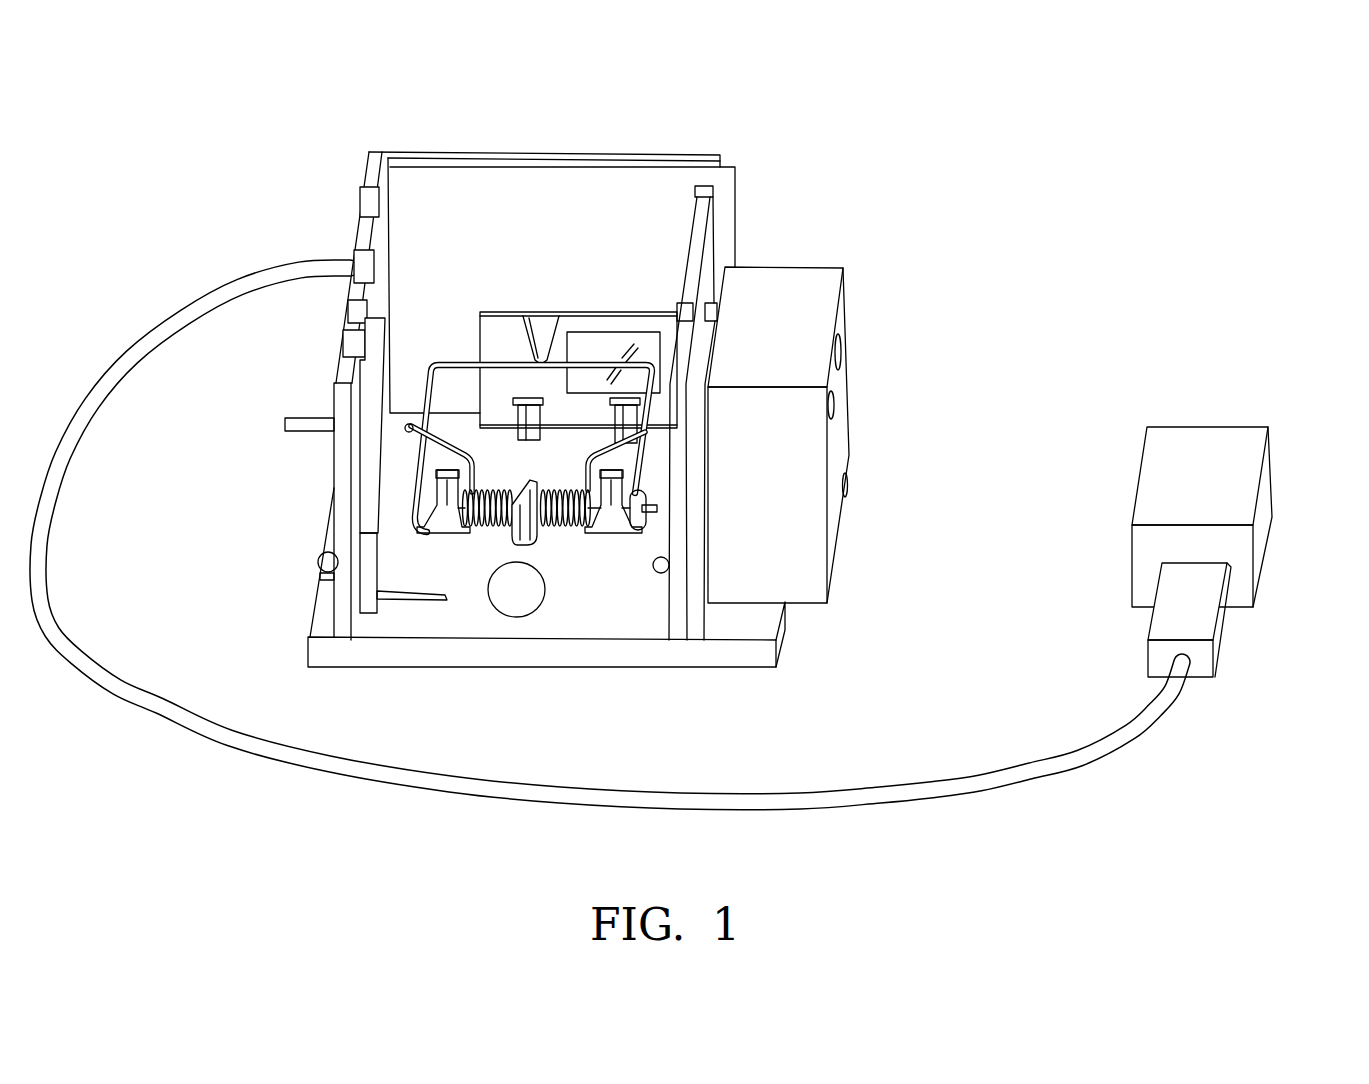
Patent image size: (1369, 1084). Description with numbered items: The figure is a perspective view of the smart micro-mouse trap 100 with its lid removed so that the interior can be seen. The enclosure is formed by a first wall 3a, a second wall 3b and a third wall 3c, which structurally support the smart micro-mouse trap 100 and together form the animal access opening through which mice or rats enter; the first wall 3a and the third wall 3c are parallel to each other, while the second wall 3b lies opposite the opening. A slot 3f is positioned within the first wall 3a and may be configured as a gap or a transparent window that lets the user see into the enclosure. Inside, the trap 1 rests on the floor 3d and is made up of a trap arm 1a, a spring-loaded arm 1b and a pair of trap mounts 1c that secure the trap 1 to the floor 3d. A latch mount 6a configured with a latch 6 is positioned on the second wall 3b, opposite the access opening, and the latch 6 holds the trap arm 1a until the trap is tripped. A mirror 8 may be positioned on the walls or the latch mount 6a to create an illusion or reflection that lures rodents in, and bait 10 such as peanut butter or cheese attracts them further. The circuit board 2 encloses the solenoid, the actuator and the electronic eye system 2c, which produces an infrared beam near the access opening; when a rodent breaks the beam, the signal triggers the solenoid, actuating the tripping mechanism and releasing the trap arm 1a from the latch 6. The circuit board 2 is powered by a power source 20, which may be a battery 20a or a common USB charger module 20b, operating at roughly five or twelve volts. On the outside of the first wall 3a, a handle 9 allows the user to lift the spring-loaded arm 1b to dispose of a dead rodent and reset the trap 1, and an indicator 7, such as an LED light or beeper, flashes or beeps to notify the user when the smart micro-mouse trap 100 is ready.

The smart micro-mouse trap 100 is at (553, 395).
The trap 1 is at (531, 514).
The trap arm 1a is at (598, 363).
The spring-loaded arm 1b is at (492, 535).
The trap mount 1c is at (445, 530).
The circuit board 2 is at (845, 437).
The electronic eye system 2c is at (656, 565).
The first wall 3a is at (345, 355).
The second wall 3b is at (557, 195).
The third wall 3c is at (701, 262).
The floor 3d is at (720, 650).
The slot 3f is at (348, 262).
The latch 6 is at (543, 330).
The latch mount 6a is at (578, 339).
The indicator 7 is at (320, 557).
The mirror 8 is at (620, 355).
The handle 9 is at (298, 418).
The bait 10 is at (523, 598).
The power source 20 is at (703, 535).
The battery 20a is at (1203, 453).
The USB charger module 20b is at (1187, 616).